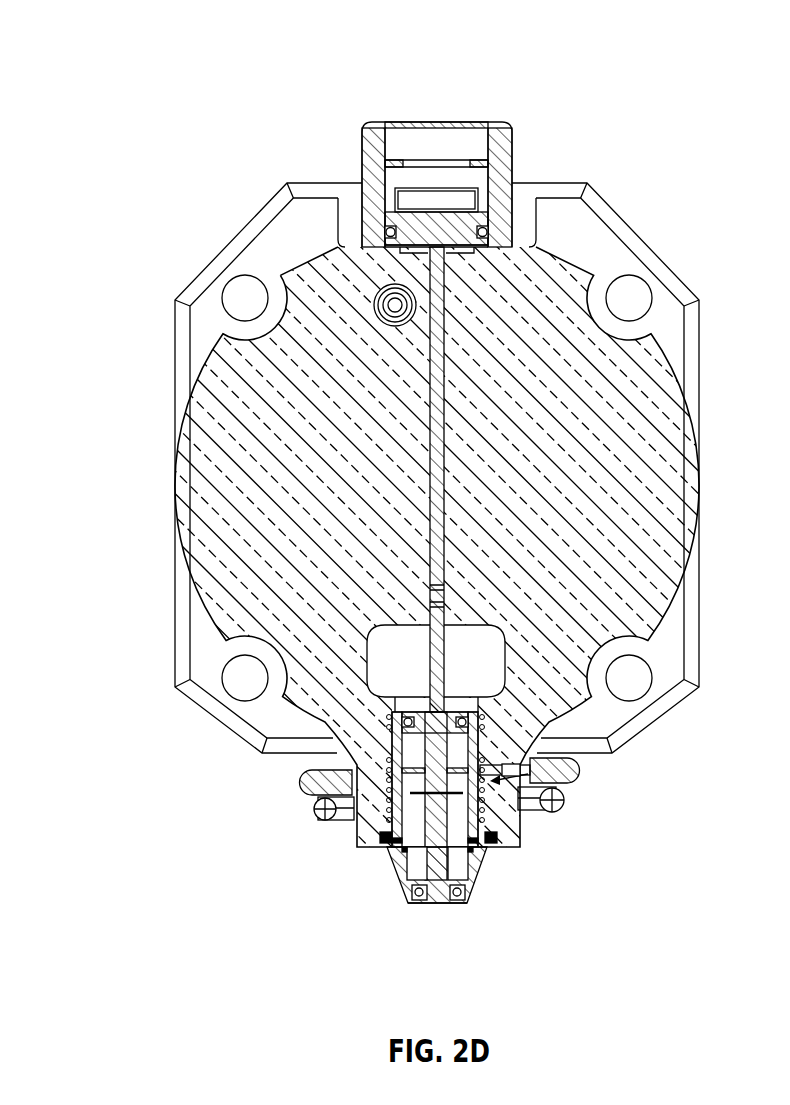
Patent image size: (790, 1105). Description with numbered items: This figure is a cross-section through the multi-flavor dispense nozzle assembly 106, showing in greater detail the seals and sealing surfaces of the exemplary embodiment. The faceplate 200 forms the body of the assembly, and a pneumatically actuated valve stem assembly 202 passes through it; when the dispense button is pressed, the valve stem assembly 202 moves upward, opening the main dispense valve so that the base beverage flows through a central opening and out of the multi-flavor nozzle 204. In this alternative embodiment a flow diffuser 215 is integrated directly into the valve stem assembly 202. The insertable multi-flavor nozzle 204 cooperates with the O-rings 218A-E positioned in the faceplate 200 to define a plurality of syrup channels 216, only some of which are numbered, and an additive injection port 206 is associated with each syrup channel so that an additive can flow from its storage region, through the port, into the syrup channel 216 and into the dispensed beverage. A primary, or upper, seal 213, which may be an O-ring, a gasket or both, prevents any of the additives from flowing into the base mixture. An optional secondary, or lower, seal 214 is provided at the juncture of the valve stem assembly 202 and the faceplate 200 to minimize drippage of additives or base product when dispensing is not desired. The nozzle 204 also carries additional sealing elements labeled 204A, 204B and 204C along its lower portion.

The multi-flavor dispense nozzle assembly 106 is at (122, 40).
The faceplate 200 is at (247, 237).
The valve stem assembly 202 is at (442, 137).
The primary seal 213 is at (370, 705).
The additive injection port 206 is at (512, 762).
The flow diffuser 215 is at (437, 842).
The syrup channel 216 is at (493, 818).
The multi-flavor nozzle 204 is at (443, 903).
The secondary seal 214 is at (414, 906).
The seal 204A is at (378, 815).
The seal 204B is at (390, 848).
The seal 204C is at (412, 857).
The O-rings 218A-E is at (562, 815).